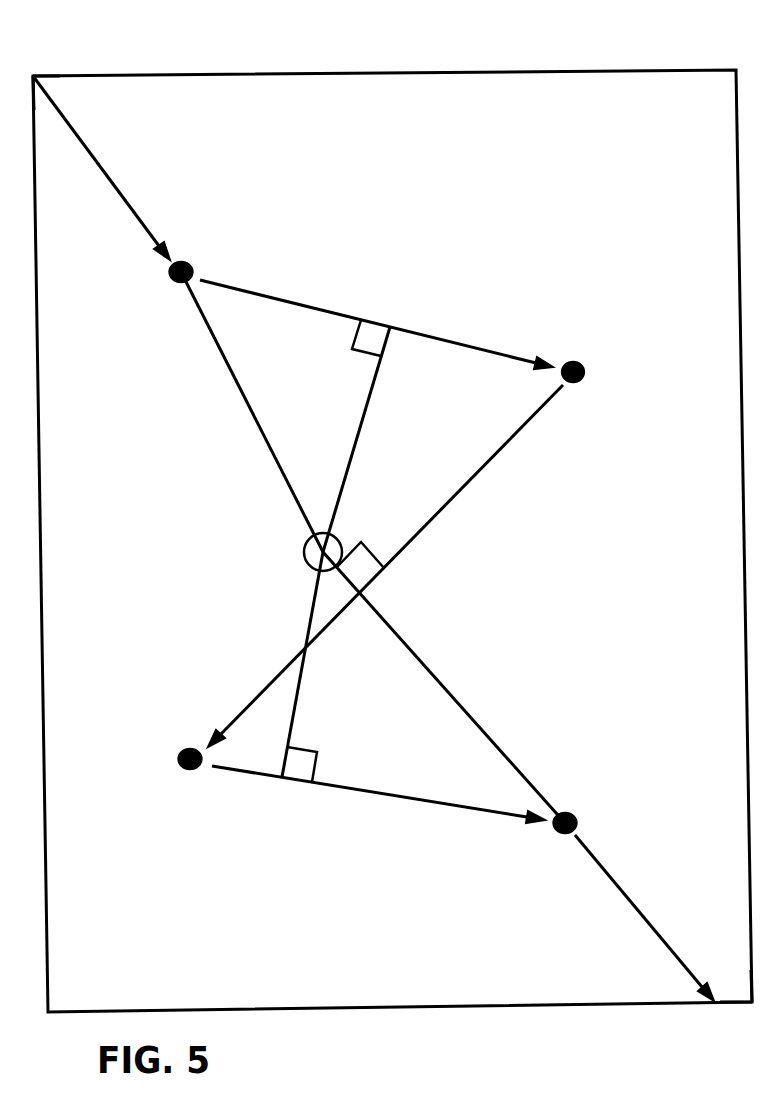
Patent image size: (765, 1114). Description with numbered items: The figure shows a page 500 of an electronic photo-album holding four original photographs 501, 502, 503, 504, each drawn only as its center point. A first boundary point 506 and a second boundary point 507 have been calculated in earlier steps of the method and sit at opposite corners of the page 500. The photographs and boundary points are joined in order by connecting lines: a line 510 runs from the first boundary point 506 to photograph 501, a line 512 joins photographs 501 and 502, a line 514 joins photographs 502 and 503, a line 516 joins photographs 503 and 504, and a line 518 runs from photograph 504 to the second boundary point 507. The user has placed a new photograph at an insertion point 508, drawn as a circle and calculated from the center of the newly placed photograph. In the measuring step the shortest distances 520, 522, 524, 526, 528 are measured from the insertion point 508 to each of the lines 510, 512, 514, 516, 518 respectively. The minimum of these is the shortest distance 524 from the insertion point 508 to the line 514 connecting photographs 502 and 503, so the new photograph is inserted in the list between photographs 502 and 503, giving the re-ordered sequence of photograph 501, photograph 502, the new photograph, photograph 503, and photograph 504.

The page 500 is at (622, 48).
The original photograph 501 is at (196, 262).
The original photograph 502 is at (590, 366).
The original photograph 503 is at (176, 755).
The original photograph 504 is at (590, 821).
The first boundary point 506 is at (40, 70).
The second boundary point 507 is at (712, 1008).
The insertion point 508 is at (304, 549).
The line 510 is at (104, 160).
The line 512 is at (304, 301).
The line 514 is at (494, 463).
The line 516 is at (370, 797).
The line 518 is at (642, 895).
The shortest distance 520 is at (235, 386).
The shortest distance 522 is at (380, 415).
The shortest distance 524 is at (367, 571).
The shortest distance 526 is at (306, 700).
The shortest distance 528 is at (447, 683).